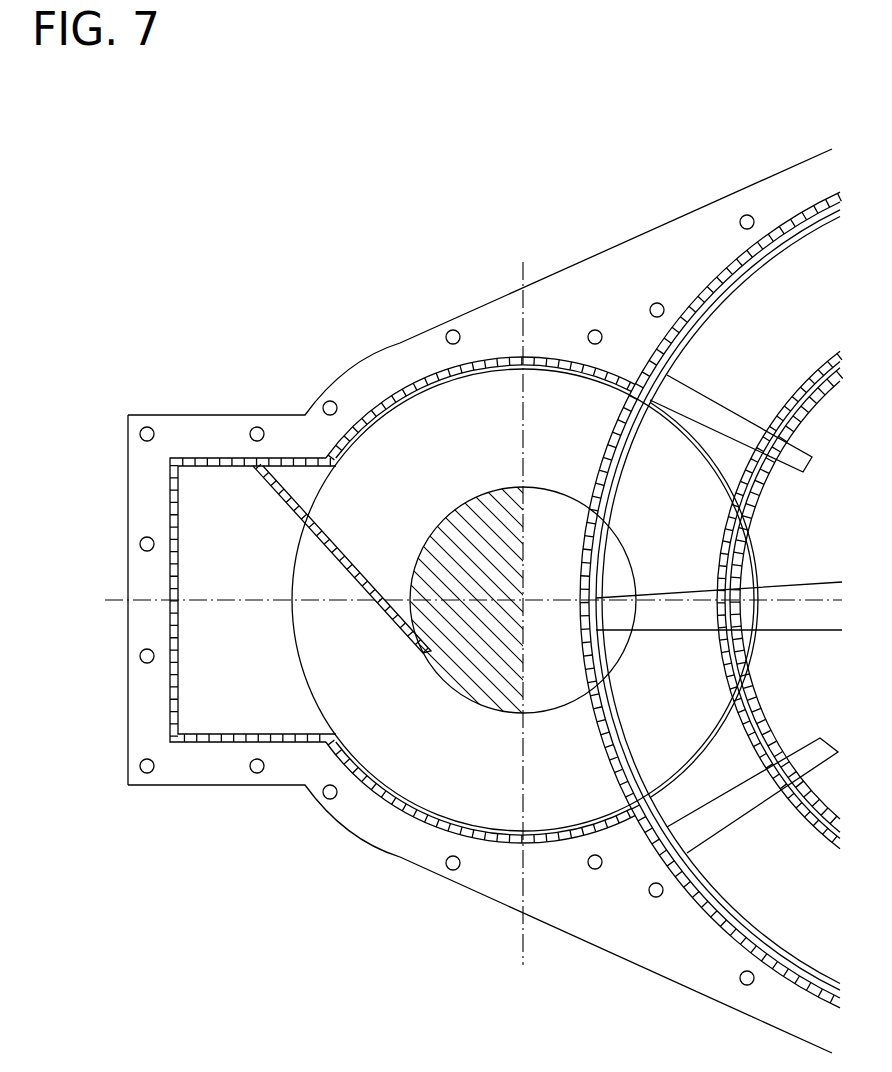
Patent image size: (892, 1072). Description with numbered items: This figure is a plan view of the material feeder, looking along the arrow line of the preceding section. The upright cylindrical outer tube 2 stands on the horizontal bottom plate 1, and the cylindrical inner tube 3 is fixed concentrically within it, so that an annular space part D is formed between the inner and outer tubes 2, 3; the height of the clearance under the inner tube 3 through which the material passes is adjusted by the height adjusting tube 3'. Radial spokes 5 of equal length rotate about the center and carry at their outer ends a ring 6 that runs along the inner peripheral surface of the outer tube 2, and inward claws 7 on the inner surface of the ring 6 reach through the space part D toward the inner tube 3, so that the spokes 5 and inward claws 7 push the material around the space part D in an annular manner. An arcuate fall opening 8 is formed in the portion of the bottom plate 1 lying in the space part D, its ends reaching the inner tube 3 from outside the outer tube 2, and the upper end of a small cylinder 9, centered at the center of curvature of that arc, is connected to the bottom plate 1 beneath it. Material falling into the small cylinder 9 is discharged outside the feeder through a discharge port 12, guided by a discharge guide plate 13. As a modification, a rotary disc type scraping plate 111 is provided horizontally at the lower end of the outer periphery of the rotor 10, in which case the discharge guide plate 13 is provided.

The bottom plate 1 is at (819, 702).
The outer tube 2 is at (708, 289).
The inner tube 3 is at (785, 600).
The height adjusting tube 3' is at (778, 598).
The spokes 5 is at (695, 590).
The ring 6 is at (716, 311).
The inward claws 7 is at (727, 413).
The fall opening 8 is at (693, 702).
The small cylinder 9 is at (396, 403).
The rotor 10 is at (553, 573).
The discharge port 12 is at (262, 657).
The discharge guide plate 13 is at (334, 568).
The rotary disc type scraping plate 111 is at (309, 681).
The space part D is at (740, 383).